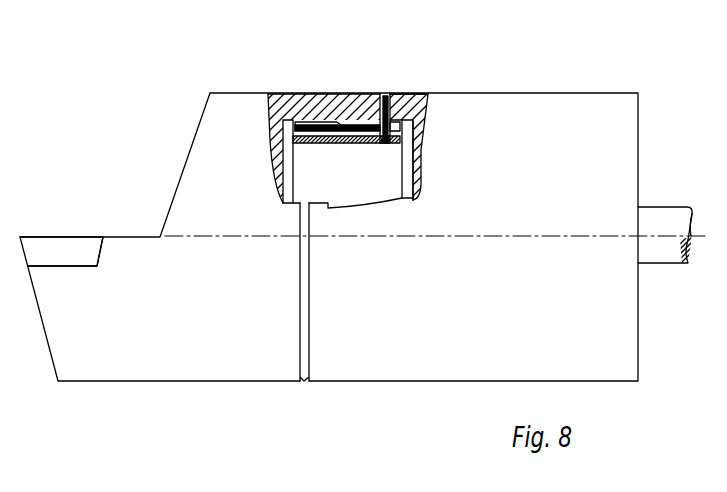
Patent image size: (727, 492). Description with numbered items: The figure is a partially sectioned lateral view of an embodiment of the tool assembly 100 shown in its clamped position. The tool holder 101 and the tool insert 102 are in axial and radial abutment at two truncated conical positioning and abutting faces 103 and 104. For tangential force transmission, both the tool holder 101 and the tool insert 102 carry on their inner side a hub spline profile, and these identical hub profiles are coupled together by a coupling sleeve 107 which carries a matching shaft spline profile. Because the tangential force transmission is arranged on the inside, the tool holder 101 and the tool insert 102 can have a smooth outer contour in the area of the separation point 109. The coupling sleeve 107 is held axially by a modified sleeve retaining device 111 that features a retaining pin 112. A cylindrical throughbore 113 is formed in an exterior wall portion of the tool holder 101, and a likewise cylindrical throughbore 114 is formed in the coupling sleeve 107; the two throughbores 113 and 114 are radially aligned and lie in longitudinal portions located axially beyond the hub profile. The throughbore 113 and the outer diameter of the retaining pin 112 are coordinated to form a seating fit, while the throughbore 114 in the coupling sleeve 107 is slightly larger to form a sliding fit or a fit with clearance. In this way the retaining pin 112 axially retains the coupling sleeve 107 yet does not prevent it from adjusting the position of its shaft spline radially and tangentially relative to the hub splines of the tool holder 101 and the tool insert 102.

The tool assembly 100 is at (142, 420).
The tool holder 101 is at (578, 58).
The tool insert 102 is at (58, 157).
The truncated conical positioning and abutting face 103 is at (315, 125).
The truncated conical positioning and abutting face 104 is at (317, 110).
The coupling sleeve 107 is at (284, 150).
The separation point 109 is at (303, 395).
The sleeve retaining device 111 is at (390, 52).
The retaining pin 112 is at (388, 97).
The cylindrical throughbore 113 is at (406, 95).
The cylindrical throughbore 114 is at (420, 145).